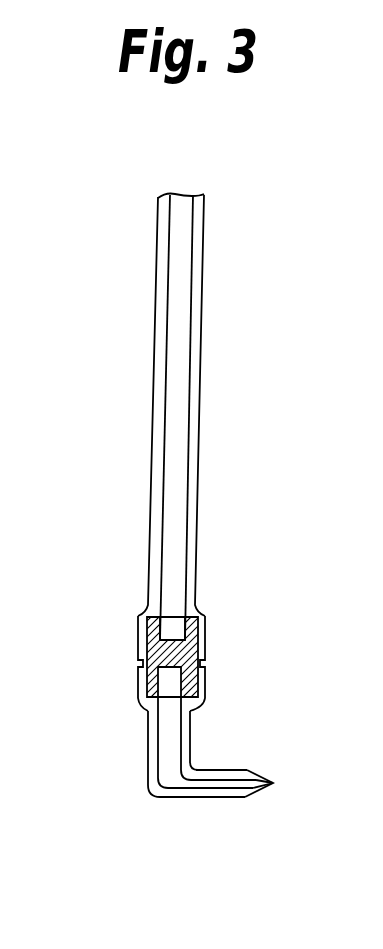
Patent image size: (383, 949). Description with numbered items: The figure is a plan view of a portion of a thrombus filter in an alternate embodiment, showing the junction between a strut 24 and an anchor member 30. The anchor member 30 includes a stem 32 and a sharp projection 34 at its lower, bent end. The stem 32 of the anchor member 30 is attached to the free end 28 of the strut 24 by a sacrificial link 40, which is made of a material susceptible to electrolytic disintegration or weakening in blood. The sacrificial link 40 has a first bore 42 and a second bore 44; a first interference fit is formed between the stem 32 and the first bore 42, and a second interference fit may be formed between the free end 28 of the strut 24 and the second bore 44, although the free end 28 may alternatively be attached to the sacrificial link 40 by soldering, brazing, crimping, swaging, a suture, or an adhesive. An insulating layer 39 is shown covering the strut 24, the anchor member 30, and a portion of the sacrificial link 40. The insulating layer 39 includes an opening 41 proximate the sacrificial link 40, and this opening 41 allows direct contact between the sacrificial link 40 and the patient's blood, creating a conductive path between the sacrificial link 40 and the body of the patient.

The strut 24 is at (180, 293).
The free end 28 is at (197, 567).
The anchor member 30 is at (143, 800).
The stem 32 is at (166, 720).
The sharp projection 34 is at (257, 793).
The insulating layer 39 is at (162, 263).
The sacrificial link 40 is at (198, 647).
The opening 41 is at (138, 652).
The first bore 42 is at (153, 672).
The second bore 44 is at (165, 632).